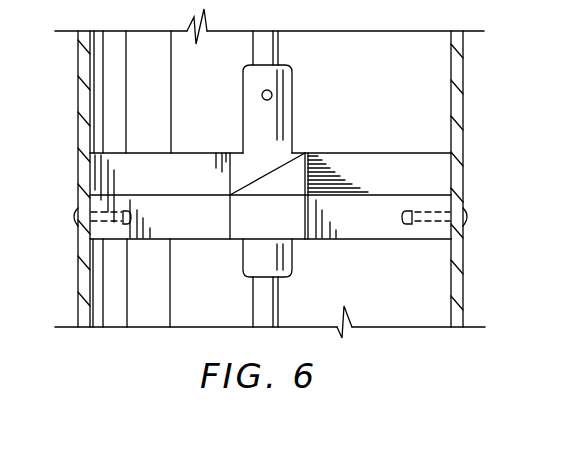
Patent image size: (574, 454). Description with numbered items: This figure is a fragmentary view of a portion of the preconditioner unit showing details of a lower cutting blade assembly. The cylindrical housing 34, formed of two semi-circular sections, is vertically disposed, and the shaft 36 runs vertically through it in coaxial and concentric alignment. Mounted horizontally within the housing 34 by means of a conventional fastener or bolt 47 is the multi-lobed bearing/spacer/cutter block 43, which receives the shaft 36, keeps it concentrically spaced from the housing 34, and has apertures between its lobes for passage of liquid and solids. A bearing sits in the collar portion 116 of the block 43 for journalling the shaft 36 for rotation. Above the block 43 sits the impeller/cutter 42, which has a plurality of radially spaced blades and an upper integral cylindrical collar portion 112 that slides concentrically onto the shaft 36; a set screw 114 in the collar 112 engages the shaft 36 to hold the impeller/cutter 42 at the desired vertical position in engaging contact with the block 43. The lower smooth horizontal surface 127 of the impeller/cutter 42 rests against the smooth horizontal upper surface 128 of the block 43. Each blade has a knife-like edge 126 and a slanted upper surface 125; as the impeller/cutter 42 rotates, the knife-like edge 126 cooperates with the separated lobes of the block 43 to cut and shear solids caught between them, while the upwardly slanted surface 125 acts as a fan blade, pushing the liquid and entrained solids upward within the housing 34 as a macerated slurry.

The cylindrical housing 34 is at (78, 96).
The shaft 36 is at (280, 44).
The impeller/cutter 42 is at (378, 152).
The bearing/spacer/cutter block 43 is at (372, 240).
The fastener bolt 47 is at (75, 212).
The cylindrical collar portion 112 is at (292, 77).
The set screw 114 is at (272, 96).
The collar portion 116 is at (292, 265).
The slanted upper surface 125 is at (262, 172).
The knife-like edge 126 is at (228, 194).
The lower smooth horizontal surface 127 is at (348, 199).
The smooth horizontal upper surface 128 is at (288, 192).